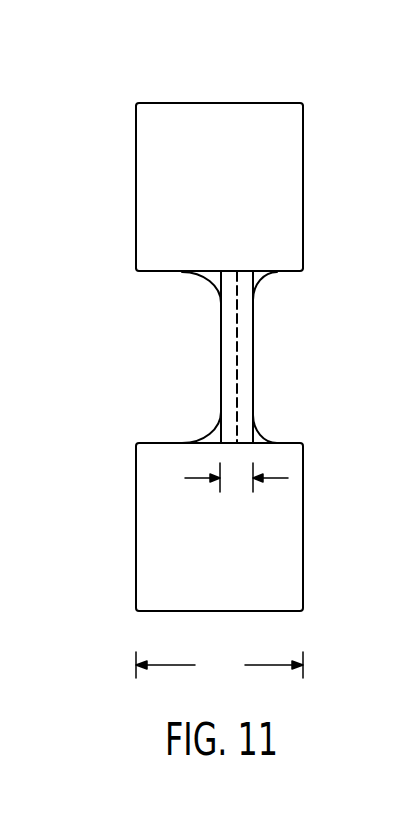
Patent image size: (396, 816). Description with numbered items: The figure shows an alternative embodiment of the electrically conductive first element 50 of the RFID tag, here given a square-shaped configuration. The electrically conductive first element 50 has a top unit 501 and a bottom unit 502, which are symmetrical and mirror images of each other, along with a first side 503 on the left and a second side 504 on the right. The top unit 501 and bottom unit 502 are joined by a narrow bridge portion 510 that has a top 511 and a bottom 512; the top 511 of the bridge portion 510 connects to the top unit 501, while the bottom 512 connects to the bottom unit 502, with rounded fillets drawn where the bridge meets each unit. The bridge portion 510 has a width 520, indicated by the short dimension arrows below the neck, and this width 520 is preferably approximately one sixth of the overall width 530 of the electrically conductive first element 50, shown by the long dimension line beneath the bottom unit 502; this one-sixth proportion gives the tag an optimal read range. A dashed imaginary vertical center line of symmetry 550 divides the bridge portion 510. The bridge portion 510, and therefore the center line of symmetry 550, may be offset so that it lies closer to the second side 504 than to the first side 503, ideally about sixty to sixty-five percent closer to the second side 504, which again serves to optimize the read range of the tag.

The electrically conductive first element 50 is at (220, 348).
The top unit 501 is at (219, 103).
The bottom unit 502 is at (218, 611).
The first side 503 is at (136, 222).
The second side 504 is at (303, 187).
The bridge portion 510 is at (254, 355).
The top of the bridge portion 511 is at (254, 275).
The bottom of the bridge portion 512 is at (255, 438).
The width of the bridge portion 520 is at (204, 478).
The overall width 530 is at (219, 665).
The imaginary vertical center line of symmetry 550 is at (237, 357).